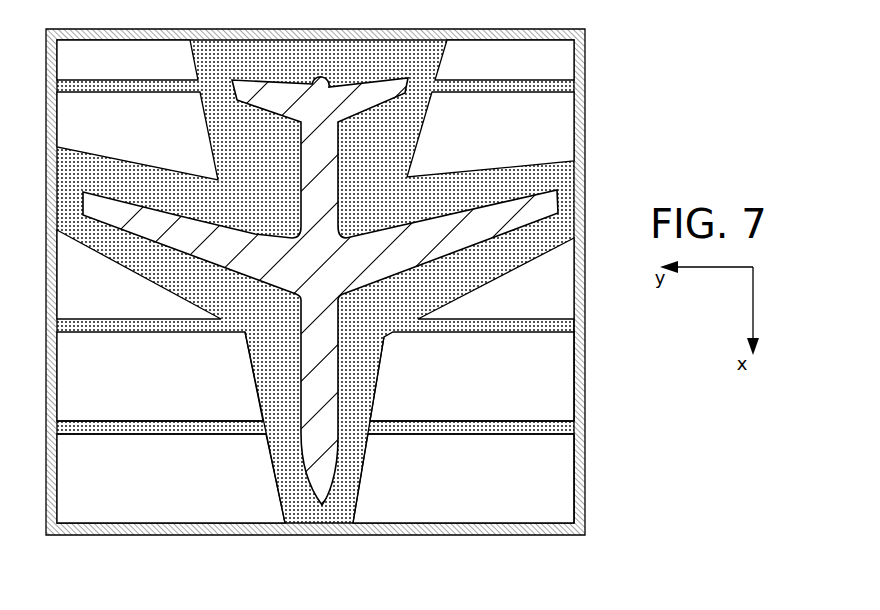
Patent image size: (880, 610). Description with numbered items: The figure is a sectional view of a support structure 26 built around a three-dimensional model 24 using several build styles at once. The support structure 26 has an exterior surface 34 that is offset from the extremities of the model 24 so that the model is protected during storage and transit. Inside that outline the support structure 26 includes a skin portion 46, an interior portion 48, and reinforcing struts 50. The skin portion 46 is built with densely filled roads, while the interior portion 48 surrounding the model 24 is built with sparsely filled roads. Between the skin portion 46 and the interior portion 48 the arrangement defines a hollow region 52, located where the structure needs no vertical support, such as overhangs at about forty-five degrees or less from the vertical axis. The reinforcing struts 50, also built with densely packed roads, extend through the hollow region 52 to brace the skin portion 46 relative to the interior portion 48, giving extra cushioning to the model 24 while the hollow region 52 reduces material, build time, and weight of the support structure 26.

The support structure 26 is at (590, 63).
The exterior surface 34 is at (583, 355).
The skin portion 46 is at (583, 483).
The reinforcing struts 50 is at (422, 428).
The hollow region 52 is at (152, 513).
The 3D model 24 is at (317, 468).
The interior portion 48 is at (352, 485).